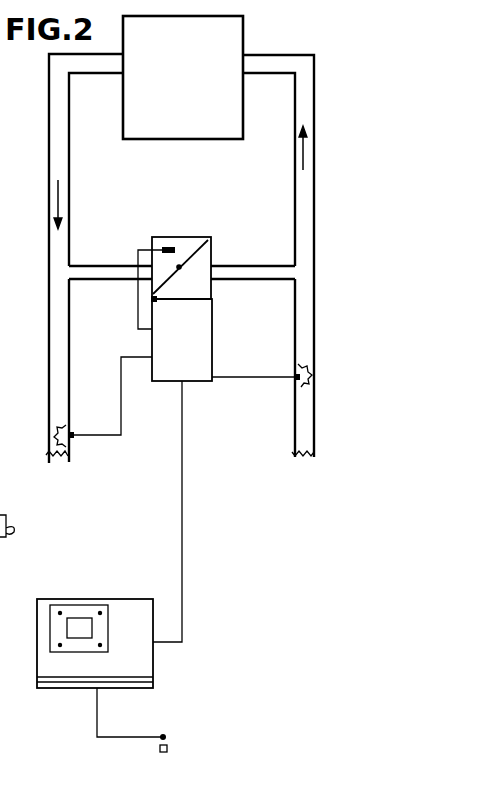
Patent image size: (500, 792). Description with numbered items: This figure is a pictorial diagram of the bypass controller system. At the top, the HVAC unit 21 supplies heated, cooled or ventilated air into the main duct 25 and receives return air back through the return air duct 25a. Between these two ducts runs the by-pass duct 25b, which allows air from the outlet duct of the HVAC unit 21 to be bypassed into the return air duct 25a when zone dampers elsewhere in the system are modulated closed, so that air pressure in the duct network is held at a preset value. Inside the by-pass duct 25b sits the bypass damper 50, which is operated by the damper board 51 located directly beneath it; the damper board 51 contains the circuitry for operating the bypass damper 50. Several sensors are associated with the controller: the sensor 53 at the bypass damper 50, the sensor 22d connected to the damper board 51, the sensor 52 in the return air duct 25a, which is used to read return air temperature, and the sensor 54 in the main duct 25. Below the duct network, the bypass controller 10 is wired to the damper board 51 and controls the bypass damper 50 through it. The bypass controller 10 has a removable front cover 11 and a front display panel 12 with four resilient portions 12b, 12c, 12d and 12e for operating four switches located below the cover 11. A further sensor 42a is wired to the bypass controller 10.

The HVAC unit 21 is at (243, 27).
The main duct 25 is at (49, 167).
The return air duct 25a is at (312, 80).
The by-pass duct 25b is at (112, 265).
The bypass damper 50 is at (206, 238).
The sensor 53 is at (184, 222).
The sensor 22d is at (152, 299).
The damper board 51 is at (212, 320).
The sensor 52 is at (295, 386).
The sensor 54 is at (74, 436).
The bypass controller 10 is at (113, 598).
The front cover 11 is at (153, 667).
The front display panel 12 is at (108, 629).
The resilient portion 12b is at (60, 613).
The resilient portion 12c is at (60, 645).
The resilient portion 12d is at (100, 647).
The resilient portion 12e is at (100, 613).
The sensor 42a is at (165, 736).